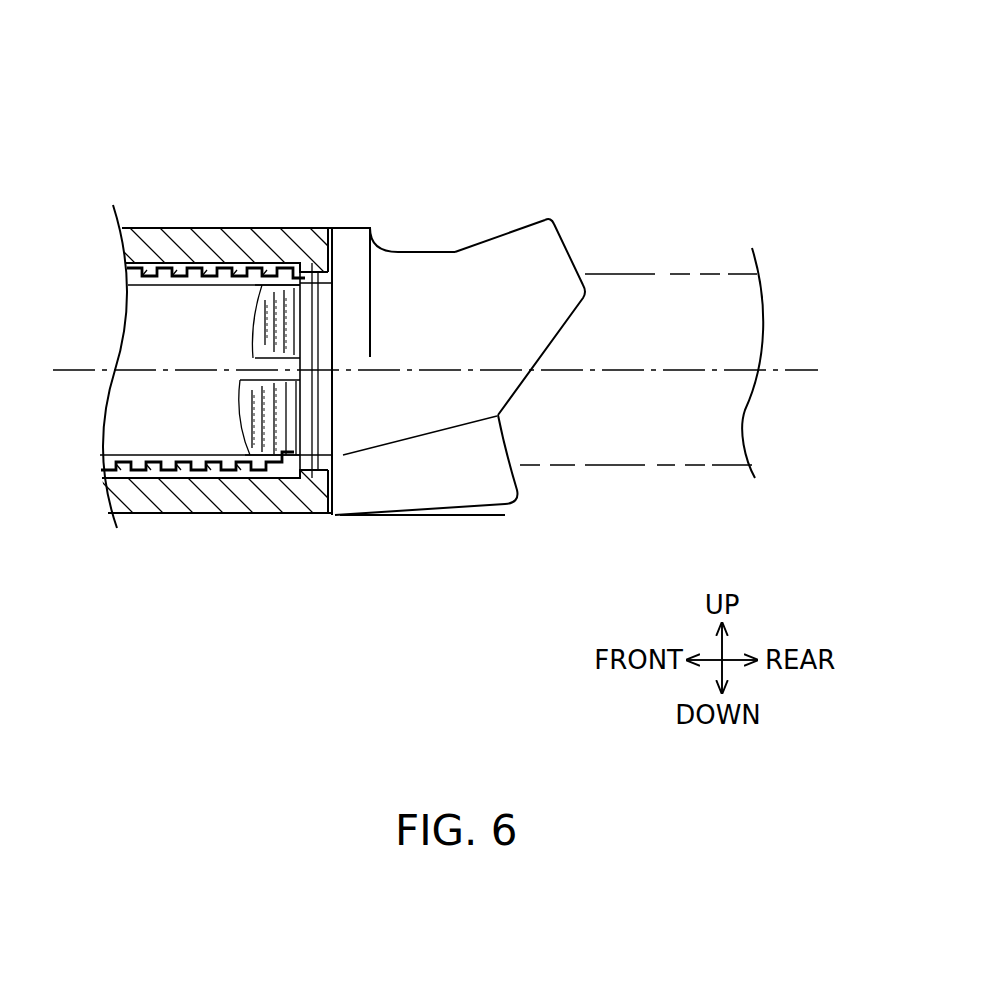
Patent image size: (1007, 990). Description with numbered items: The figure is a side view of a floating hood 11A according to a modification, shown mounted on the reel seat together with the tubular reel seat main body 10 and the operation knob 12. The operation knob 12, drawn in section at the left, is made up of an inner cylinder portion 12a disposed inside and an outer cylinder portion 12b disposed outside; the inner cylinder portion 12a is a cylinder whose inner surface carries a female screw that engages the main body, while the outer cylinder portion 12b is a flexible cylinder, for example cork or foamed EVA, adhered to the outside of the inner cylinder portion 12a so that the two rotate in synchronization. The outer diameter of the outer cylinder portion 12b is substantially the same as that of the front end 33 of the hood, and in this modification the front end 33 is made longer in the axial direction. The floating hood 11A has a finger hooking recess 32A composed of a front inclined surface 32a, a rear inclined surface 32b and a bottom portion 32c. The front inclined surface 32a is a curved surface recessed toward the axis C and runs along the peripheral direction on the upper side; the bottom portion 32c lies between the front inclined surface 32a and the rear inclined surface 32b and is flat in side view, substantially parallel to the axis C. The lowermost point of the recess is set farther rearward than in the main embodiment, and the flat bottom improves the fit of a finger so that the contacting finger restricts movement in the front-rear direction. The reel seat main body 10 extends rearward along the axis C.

The reel seat main body 10 is at (613, 273).
The floating hood 11A is at (518, 135).
The operation knob 12 is at (270, 162).
The inner cylinder portion 12a is at (200, 240).
The outer cylinder portion 12b is at (170, 237).
The finger hooking recess 32A is at (416, 197).
The front inclined surface 32a is at (388, 228).
The rear inclined surface 32b is at (508, 233).
The bottom portion 32c is at (420, 250).
The front end 33 is at (343, 228).
The axis C is at (795, 370).